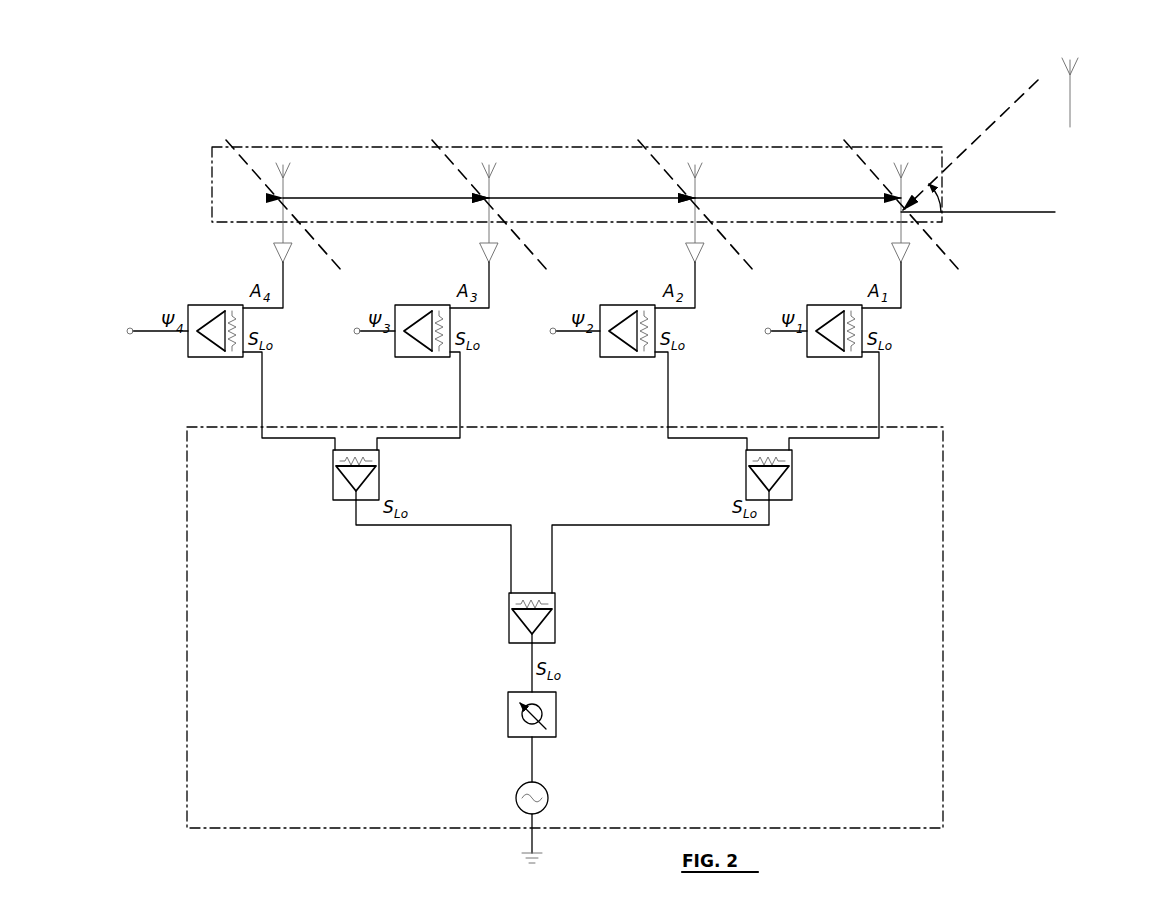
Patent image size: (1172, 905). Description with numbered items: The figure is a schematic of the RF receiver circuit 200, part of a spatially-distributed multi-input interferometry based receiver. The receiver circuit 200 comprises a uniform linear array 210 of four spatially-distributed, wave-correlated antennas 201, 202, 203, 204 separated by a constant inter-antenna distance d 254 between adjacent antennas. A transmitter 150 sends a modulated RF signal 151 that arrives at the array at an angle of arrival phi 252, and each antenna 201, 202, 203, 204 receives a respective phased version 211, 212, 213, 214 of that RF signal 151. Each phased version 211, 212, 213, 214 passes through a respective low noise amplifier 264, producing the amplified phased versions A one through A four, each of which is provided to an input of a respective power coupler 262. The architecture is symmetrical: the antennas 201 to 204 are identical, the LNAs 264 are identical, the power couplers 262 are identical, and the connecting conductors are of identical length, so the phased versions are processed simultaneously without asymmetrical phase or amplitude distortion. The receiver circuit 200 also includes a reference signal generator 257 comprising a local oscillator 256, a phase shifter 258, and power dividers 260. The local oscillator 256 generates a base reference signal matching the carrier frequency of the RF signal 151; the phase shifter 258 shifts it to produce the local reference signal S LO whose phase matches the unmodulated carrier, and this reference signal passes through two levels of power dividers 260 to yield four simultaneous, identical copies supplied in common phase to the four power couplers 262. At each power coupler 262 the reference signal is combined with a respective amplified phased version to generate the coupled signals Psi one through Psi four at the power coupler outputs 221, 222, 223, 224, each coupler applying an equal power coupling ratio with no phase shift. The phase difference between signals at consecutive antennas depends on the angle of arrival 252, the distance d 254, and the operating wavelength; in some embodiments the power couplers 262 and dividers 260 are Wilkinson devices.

The RF receiver circuit 200 is at (168, 90).
The uniform linear array 210 is at (212, 185).
The antenna 201 is at (902, 205).
The antenna 202 is at (694, 192).
The antenna 203 is at (490, 192).
The antenna 204 is at (284, 192).
The phased version of the modulated RF signal 211 is at (898, 202).
The phased version of the modulated RF signal 212 is at (693, 196).
The phased version of the modulated RF signal 213 is at (448, 160).
The phased version of the modulated RF signal 214 is at (243, 150).
The power coupler output 221 is at (766, 329).
The power coupler output 222 is at (551, 330).
The power coupler output 223 is at (355, 329).
The power coupler output 224 is at (128, 329).
The angle of arrival 252 is at (958, 196).
The inter-antenna distance 254 is at (750, 198).
The local oscillator 256 is at (548, 800).
The reference signal generator 257 is at (943, 540).
The phase shifter 258 is at (556, 715).
The power divider 260 is at (333, 480).
The power coupler 262 is at (220, 357).
The low noise amplifier 264 is at (274, 253).
The transmitter 150 is at (1072, 103).
The modulated RF signal 151 is at (970, 145).